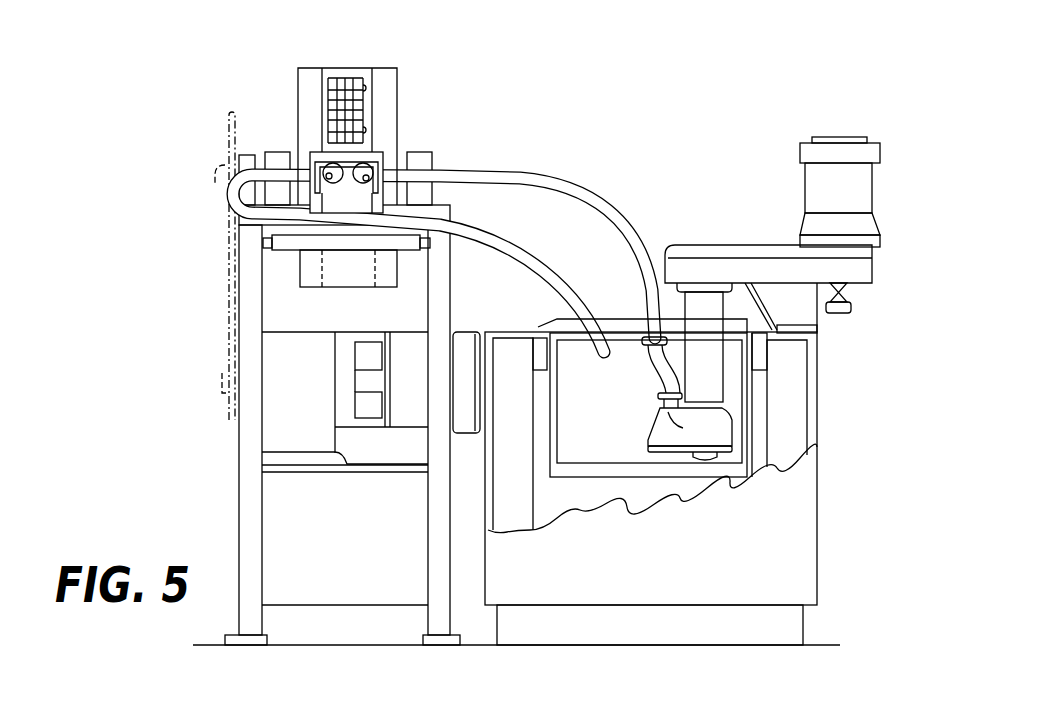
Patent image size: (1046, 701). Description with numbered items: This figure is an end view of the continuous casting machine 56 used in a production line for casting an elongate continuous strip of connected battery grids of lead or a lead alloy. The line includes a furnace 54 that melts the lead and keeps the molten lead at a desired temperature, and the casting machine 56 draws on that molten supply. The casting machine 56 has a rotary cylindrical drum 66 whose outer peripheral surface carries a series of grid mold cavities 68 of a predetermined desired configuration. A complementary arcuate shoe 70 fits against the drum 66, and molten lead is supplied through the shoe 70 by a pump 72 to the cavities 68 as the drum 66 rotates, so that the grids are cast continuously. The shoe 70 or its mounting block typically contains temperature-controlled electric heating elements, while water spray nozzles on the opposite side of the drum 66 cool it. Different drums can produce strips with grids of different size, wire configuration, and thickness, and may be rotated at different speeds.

The furnace 54 is at (817, 487).
The continuous casting machine 56 is at (240, 435).
The rotary cylindrical drum 66 is at (397, 83).
The grid mold cavities 68 is at (345, 67).
The arcuate shoe 70 is at (377, 152).
The pump 72 is at (646, 429).